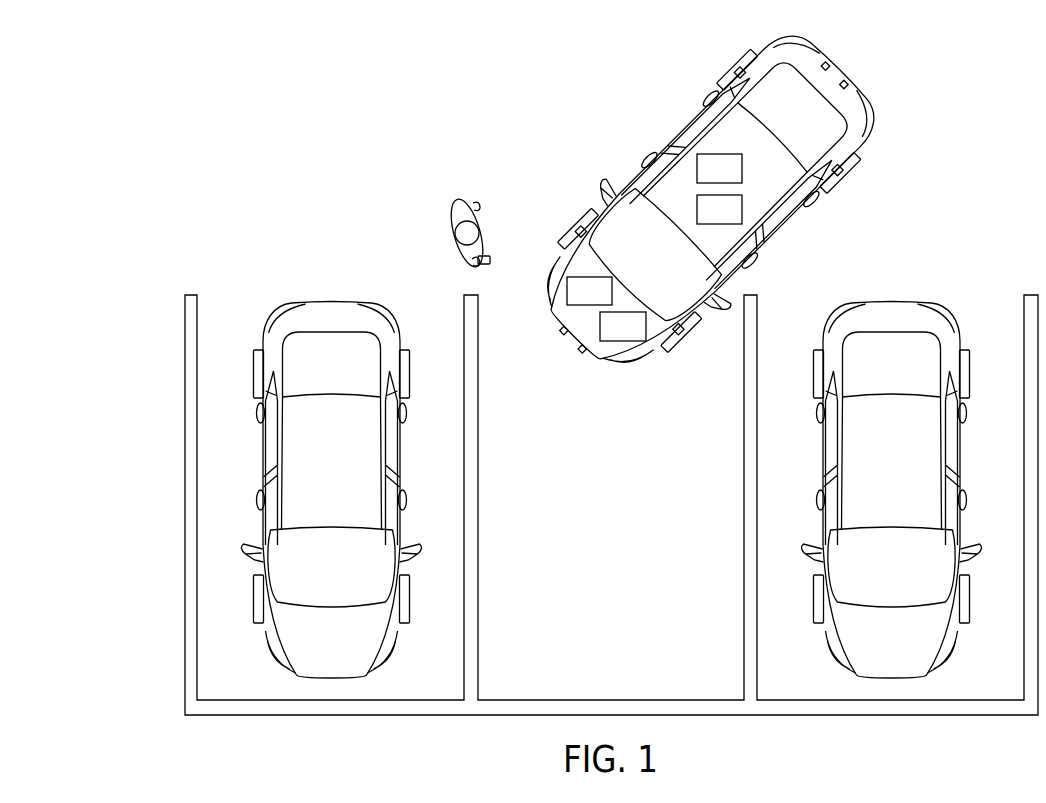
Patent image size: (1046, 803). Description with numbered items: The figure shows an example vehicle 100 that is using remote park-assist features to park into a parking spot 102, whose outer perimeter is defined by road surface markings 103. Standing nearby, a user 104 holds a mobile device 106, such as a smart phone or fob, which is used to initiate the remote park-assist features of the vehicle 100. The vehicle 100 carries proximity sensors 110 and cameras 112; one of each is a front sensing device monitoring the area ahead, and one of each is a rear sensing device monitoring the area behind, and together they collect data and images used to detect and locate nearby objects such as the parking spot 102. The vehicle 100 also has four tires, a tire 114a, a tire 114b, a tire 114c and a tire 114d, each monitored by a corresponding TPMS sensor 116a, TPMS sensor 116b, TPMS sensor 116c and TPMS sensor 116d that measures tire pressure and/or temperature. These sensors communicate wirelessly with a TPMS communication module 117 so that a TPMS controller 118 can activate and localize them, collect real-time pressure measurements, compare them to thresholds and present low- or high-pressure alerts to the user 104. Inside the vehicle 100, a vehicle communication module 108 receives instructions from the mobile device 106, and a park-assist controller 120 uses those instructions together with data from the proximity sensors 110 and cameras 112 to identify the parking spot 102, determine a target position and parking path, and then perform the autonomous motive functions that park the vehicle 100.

The vehicle 100 is at (836, 74).
The parking spot 102 is at (629, 526).
The road surface markings 103 is at (478, 463).
The user 104 is at (466, 201).
The mobile device 106 is at (488, 266).
The vehicle communication module 108 is at (604, 302).
The proximity sensors 110 is at (824, 64).
The cameras 112 is at (847, 85).
The tire 114a is at (673, 360).
The tire 114b is at (572, 228).
The tire 114c is at (855, 168).
The tire 114d is at (712, 82).
The TPMS sensor 116a is at (686, 345).
The TPMS sensor 116b is at (557, 240).
The TPMS sensor 116c is at (842, 182).
The TPMS sensor 116d is at (730, 73).
The TPMS communication module 117 is at (734, 180).
The TPMS controller 118 is at (734, 221).
The park-assist controller 120 is at (638, 337).